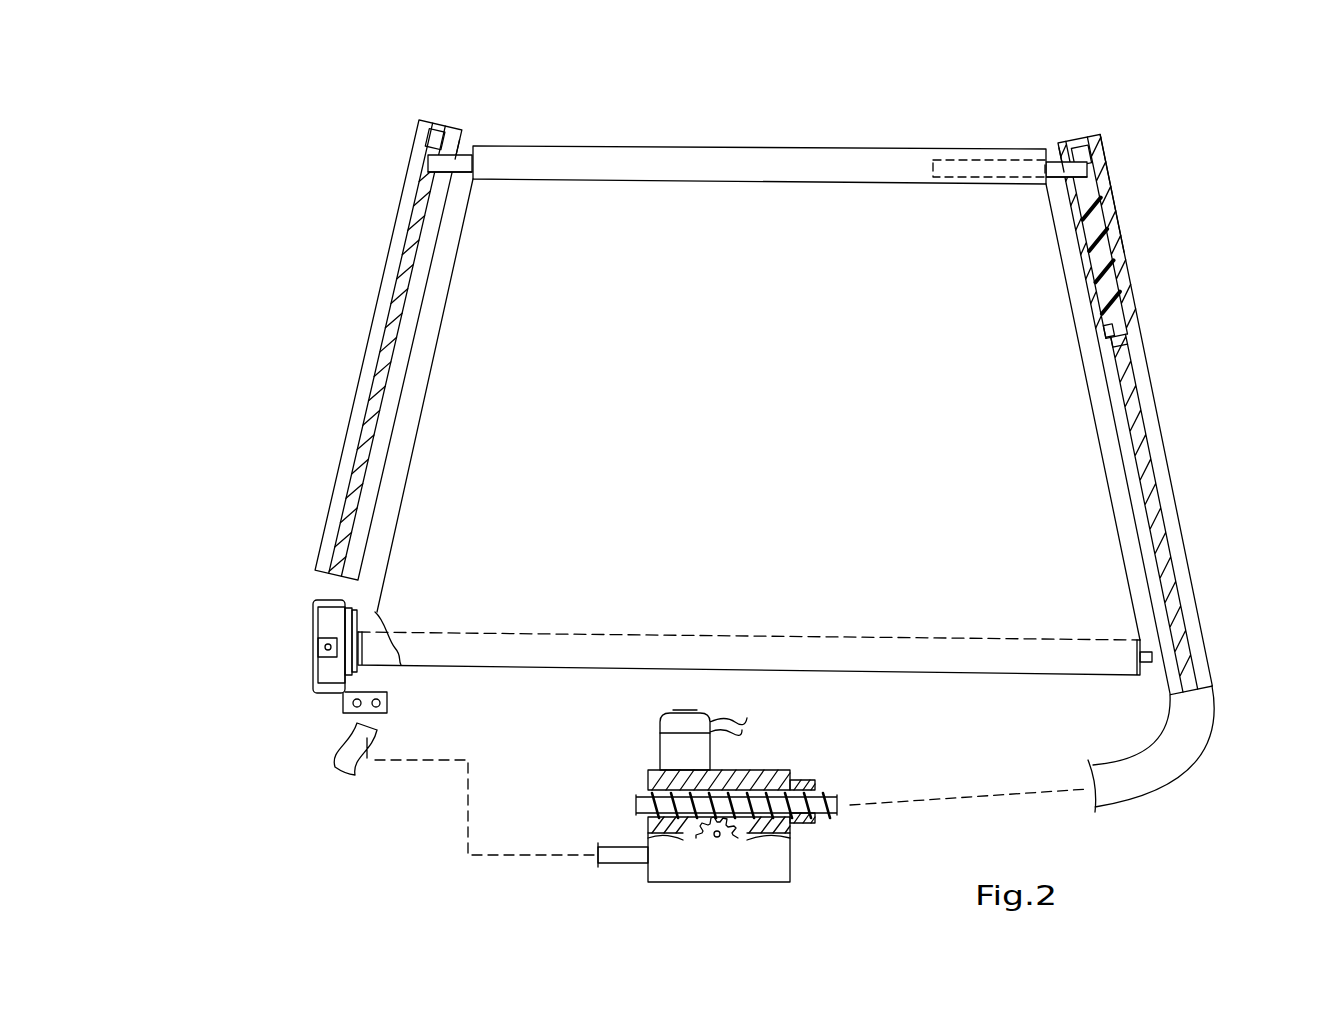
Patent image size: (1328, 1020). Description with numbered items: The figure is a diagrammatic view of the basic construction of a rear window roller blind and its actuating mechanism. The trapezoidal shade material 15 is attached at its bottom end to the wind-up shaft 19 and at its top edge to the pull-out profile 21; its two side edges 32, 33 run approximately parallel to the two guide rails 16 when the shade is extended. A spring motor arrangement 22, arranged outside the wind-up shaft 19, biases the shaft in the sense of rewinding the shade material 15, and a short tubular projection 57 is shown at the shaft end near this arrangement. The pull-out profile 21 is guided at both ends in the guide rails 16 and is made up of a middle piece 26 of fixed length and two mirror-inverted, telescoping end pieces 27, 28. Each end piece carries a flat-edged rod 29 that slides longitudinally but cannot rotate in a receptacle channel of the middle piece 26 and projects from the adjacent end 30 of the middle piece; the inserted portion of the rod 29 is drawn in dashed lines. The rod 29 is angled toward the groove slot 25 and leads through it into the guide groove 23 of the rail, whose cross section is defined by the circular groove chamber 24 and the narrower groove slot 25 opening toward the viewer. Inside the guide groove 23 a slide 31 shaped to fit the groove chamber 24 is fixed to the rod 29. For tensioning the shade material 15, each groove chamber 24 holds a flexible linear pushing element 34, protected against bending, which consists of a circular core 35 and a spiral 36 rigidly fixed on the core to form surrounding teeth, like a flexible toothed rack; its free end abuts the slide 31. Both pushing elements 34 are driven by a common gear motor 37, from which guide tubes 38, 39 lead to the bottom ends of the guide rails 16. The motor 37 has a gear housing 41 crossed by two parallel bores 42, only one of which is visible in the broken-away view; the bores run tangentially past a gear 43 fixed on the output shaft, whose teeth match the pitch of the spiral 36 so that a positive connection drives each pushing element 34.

The shade material 15 is at (785, 393).
The guide rails 16 is at (356, 378).
The wind-up shaft 19 is at (805, 647).
The pull-out profile 21 is at (762, 142).
The spring motor arrangement 22 is at (281, 665).
The guide groove 23 is at (1081, 128).
The groove chamber 24 is at (1107, 136).
The groove slot 25 is at (1118, 343).
The middle piece 26 is at (903, 160).
The end piece 27 is at (1051, 145).
The end piece 28 is at (467, 140).
The rod 29 is at (460, 168).
The end of the middle piece 30 is at (473, 160).
The slide 31 is at (437, 120).
The side edge 32 is at (433, 340).
The side edge 33 is at (1118, 520).
The flexible linear pushing element 34 is at (385, 263).
The core 35 is at (1112, 273).
The spiral 36 is at (1107, 333).
The gear motor 37 is at (742, 805).
The guide tube 38 is at (1158, 767).
The guide tube 39 is at (355, 752).
The gear housing 41 is at (777, 858).
The bore 42 is at (648, 785).
The gear 43 is at (725, 843).
The tubular projection 57 is at (360, 632).